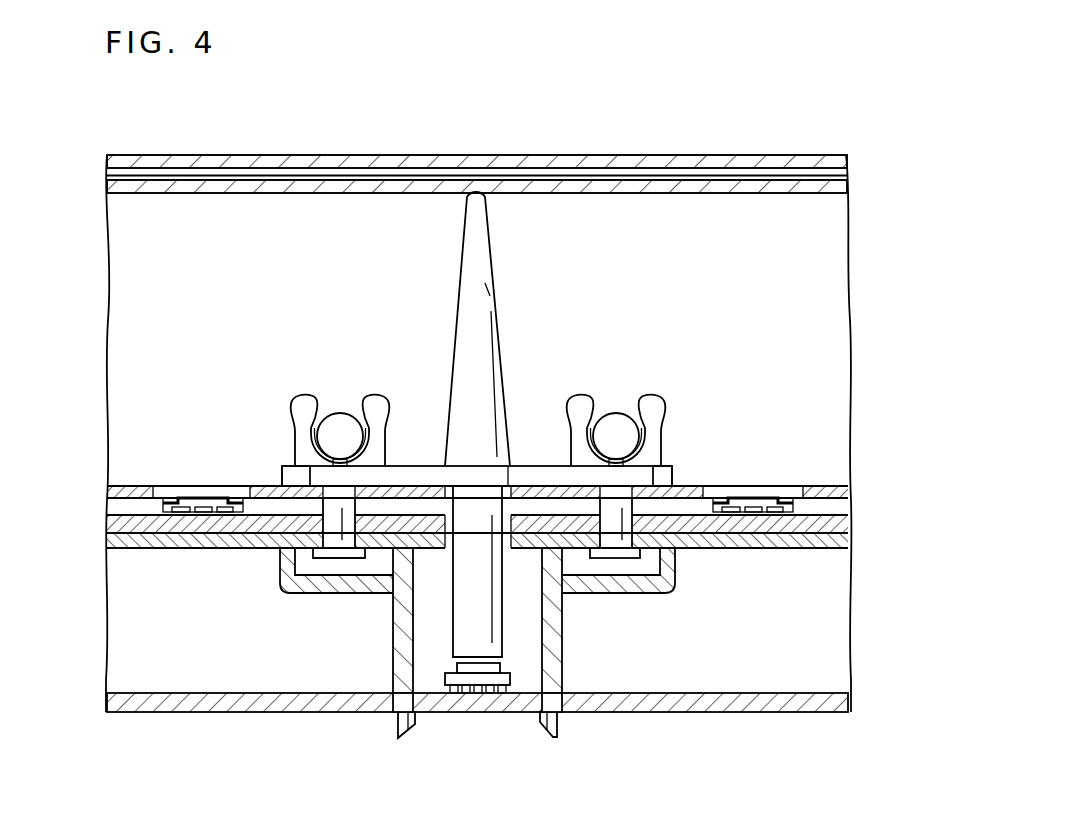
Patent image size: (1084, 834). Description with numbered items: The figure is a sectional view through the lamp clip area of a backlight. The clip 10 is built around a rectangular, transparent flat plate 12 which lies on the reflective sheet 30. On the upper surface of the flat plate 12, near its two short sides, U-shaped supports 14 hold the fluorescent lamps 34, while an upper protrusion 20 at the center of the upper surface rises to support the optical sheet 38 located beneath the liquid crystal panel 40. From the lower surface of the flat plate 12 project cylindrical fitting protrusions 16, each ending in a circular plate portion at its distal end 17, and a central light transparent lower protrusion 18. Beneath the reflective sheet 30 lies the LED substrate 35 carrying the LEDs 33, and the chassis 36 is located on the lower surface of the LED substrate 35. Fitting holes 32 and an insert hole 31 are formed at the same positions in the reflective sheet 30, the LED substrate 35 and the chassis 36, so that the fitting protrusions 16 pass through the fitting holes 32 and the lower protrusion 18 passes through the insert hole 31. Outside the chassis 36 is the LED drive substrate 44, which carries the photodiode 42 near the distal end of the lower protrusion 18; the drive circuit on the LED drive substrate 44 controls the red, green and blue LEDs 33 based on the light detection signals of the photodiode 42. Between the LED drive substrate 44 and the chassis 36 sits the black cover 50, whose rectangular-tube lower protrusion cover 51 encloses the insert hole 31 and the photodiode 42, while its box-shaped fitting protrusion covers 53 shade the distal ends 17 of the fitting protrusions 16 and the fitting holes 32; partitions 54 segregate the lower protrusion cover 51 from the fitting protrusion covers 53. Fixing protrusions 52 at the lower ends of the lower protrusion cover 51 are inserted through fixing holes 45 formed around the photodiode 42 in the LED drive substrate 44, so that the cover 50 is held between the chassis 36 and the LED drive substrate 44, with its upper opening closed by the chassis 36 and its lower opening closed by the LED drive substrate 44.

The lamp clip 10 is at (396, 298).
The flat plate 12 is at (408, 466).
The U-shaped supports 14 is at (297, 400).
The cylindrical fitting protrusions 16 is at (328, 523).
The distal ends 17 is at (318, 593).
The lower protrusion 18 is at (495, 620).
The upper protrusion 20 is at (495, 308).
The reflective sheet 30 is at (827, 488).
The insert hole 31 is at (510, 462).
The fitting holes 32 is at (300, 484).
The LEDs 33 is at (200, 496).
The lamps 34 is at (342, 423).
The LED substrate 35 is at (851, 527).
The chassis 36 is at (851, 540).
The optical sheet 38 is at (840, 188).
The liquid crystal panel 40 is at (846, 165).
The photodiode 42 is at (503, 665).
The LED drive substrate 44 is at (852, 703).
The fixing holes 45 is at (560, 708).
The cover 50 is at (477, 672).
The lower protrusion cover 51 is at (395, 658).
The fixing protrusions 52 is at (417, 725).
The fitting protrusion covers 53 is at (333, 560).
The partitions 54 is at (373, 570).